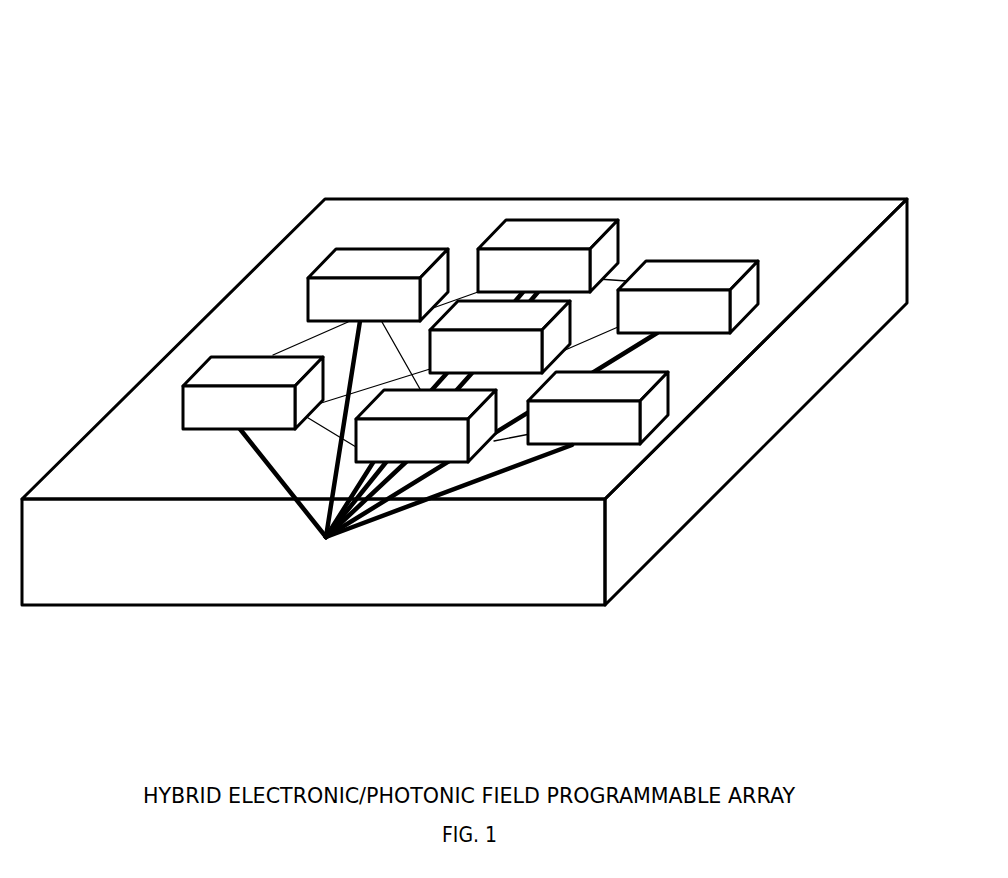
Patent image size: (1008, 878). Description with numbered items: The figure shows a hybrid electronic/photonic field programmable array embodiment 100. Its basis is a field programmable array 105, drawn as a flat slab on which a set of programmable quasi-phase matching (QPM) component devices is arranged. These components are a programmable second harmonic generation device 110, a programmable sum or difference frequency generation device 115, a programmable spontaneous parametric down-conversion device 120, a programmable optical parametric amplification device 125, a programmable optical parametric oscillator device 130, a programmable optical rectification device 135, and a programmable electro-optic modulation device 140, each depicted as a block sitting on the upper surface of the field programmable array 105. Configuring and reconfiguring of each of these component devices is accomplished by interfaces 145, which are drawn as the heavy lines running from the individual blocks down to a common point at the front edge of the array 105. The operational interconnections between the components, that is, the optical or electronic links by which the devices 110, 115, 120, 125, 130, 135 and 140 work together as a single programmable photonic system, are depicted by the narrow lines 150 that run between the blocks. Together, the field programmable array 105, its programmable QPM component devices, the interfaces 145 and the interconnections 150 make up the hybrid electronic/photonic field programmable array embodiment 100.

The hybrid electronic/photonic field programmable array embodiment 100 is at (55, 30).
The field programmable array 105 is at (464, 402).
The programmable second harmonic generation device 110 is at (378, 285).
The programmable sum or difference frequency generation device 115 is at (548, 256).
The programmable spontaneous parametric down-conversion device 120 is at (688, 297).
The programmable optical parametric amplification device 125 is at (598, 408).
The programmable optical parametric oscillator device 130 is at (426, 426).
The programmable optical rectification device 135 is at (253, 393).
The programmable electro-optic modulation device 140 is at (500, 337).
The interfaces 145 is at (410, 518).
The narrow lines 150 is at (662, 348).